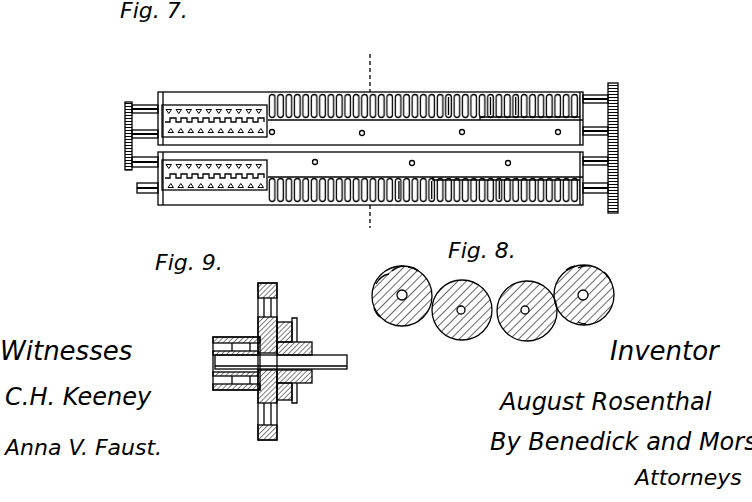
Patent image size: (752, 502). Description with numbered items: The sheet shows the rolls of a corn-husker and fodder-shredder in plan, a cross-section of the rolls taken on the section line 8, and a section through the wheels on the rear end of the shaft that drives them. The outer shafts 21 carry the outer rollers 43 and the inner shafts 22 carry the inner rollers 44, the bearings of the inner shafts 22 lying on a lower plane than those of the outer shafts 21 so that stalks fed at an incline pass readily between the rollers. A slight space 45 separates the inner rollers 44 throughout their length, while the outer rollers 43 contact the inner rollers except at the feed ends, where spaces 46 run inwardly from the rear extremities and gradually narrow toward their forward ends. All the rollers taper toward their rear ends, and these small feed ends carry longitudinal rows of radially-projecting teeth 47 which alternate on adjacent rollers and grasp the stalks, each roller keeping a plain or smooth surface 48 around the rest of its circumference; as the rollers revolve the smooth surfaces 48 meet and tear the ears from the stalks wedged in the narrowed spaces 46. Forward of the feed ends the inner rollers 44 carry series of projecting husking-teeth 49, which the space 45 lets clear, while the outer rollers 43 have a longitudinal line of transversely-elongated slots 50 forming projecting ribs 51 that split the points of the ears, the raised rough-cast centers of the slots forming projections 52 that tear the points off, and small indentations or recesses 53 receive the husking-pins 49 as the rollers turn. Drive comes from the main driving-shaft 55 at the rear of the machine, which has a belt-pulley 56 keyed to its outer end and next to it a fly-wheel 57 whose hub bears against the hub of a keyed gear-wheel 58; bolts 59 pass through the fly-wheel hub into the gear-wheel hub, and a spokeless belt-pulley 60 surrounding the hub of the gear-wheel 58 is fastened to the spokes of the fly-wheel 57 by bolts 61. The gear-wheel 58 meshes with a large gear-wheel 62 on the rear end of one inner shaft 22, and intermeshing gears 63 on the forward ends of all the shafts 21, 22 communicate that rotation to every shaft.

In FIG. 7, the section line 8 is at (368, 142).
In FIG. 7, the outer shafts 21 is at (146, 105).
In FIG. 8, the outer shafts 21 is at (396, 312).
In FIG. 7, the inner shafts 22 is at (133, 133).
In FIG. 8, the inner shafts 22 is at (462, 306).
In FIG. 7, the outer rollers 43 is at (307, 96).
In FIG. 8, the outer rollers 43 is at (372, 294).
In FIG. 7, the inner rollers 44 is at (527, 127).
In FIG. 8, the inner rollers 44 is at (466, 340).
In FIG. 7, the space between inner rollers 45 is at (428, 150).
In FIG. 7, the spaces at feed ends 46 is at (203, 119).
In FIG. 7, the radially-projecting teeth 47 is at (238, 110).
In FIG. 7, the plain or smooth surface 48 is at (188, 108).
In FIG. 7, the husking-teeth 49 is at (358, 134).
In FIG. 7, the transversely-elongated slots 50 is at (344, 92).
In FIG. 8, the transversely-elongated slots 50 is at (380, 277).
In FIG. 7, the projecting ribs 51 is at (494, 90).
In FIG. 8, the projecting ribs 51 is at (414, 268).
In FIG. 7, the projections 52 is at (514, 93).
In FIG. 8, the projections 52 is at (400, 266).
In FIG. 8, the indentations or recesses 53 is at (375, 312).
In FIG. 9, the main driving-shaft 55 is at (340, 367).
In FIG. 9, the belt-pulley 56 is at (225, 338).
In FIG. 9, the fly-wheel 57 is at (270, 440).
In FIG. 9, the gear-wheel 58 is at (308, 383).
In FIG. 9, the bolts 59 is at (237, 345).
In FIG. 9, the spokeless belt-pulley 60 is at (294, 326).
In FIG. 9, the bolts 61 is at (260, 326).
In FIG. 7, the large gear-wheel 62 is at (125, 152).
In FIG. 7, the intermeshing gears 63 is at (618, 90).